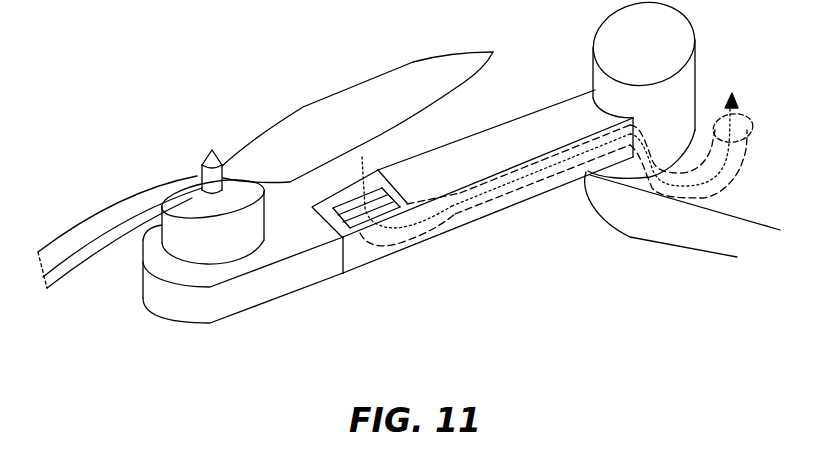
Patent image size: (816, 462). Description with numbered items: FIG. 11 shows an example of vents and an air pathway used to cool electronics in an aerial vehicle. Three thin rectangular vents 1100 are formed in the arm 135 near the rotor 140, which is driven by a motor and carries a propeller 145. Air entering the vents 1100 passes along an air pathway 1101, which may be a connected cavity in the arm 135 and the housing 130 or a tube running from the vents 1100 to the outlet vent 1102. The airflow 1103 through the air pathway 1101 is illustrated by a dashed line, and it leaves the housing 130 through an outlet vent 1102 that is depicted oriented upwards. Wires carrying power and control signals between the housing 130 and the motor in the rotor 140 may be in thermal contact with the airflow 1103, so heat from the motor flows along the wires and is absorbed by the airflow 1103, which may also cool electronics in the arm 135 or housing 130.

The housing 130 is at (688, 220).
The arm 135 is at (577, 110).
The rotor 140 is at (182, 246).
The propeller 145 is at (262, 155).
The vents 1100 is at (400, 207).
The air pathway 1101 is at (399, 241).
The outlet vent 1102 is at (743, 125).
The airflow 1103 is at (477, 199).